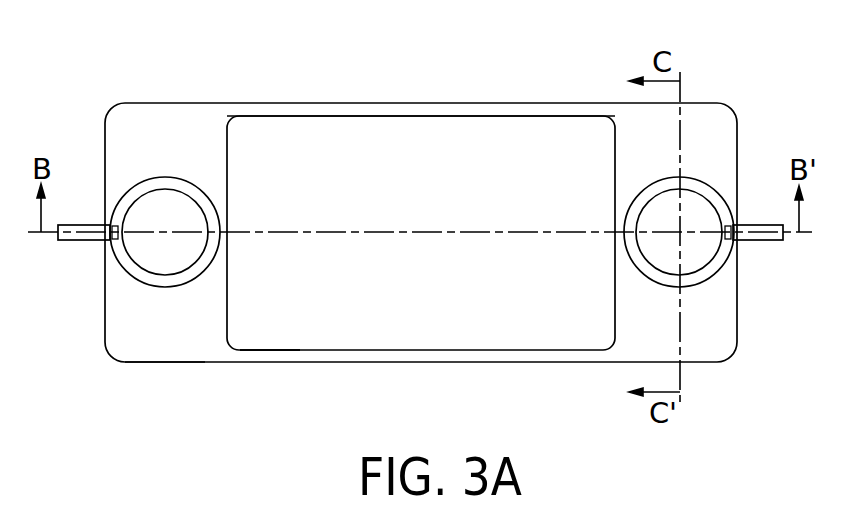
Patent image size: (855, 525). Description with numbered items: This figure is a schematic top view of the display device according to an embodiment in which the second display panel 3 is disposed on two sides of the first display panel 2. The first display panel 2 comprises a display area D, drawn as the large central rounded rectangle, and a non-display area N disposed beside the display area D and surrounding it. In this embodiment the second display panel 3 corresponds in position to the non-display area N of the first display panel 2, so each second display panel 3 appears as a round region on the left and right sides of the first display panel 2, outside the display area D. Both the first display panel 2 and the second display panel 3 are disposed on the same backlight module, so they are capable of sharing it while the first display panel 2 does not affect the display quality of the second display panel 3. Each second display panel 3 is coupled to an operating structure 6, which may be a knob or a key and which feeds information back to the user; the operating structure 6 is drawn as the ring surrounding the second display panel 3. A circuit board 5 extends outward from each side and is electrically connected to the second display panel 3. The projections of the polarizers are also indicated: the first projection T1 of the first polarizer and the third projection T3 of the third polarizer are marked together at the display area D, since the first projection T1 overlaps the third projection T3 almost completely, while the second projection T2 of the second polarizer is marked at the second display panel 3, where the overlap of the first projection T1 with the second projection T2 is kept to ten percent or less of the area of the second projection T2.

The first display panel 2 is at (334, 130).
The second display panel 3 is at (152, 200).
The circuit board 5 is at (80, 225).
The operating structure 6 is at (187, 189).
The non-display area N is at (552, 103).
The display area D is at (580, 116).
The first projection T1 is at (260, 350).
The second projection T2 is at (165, 288).
The third projection T3 is at (260, 350).